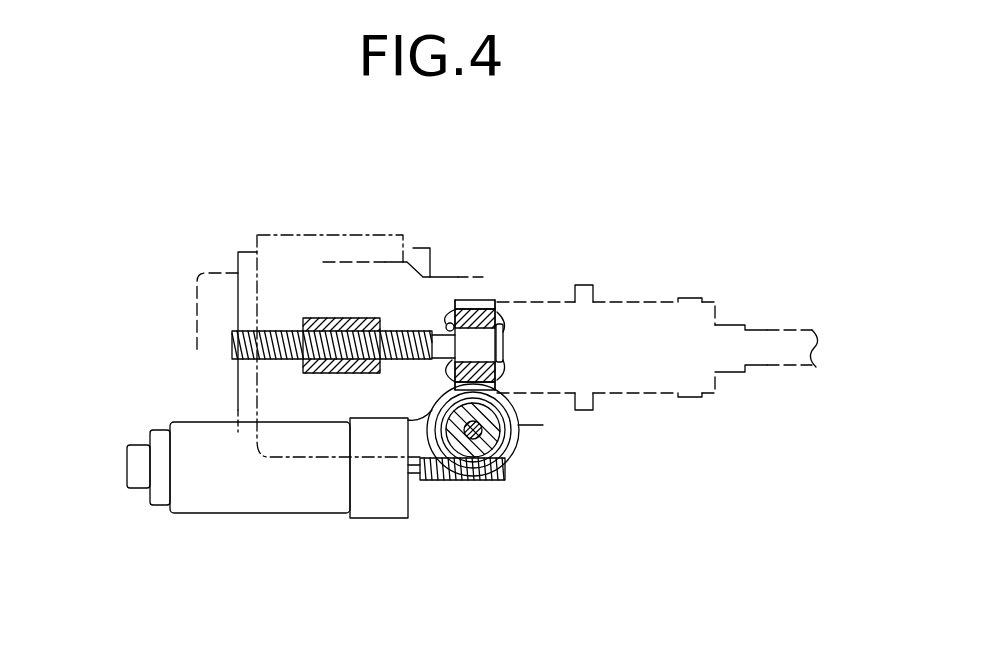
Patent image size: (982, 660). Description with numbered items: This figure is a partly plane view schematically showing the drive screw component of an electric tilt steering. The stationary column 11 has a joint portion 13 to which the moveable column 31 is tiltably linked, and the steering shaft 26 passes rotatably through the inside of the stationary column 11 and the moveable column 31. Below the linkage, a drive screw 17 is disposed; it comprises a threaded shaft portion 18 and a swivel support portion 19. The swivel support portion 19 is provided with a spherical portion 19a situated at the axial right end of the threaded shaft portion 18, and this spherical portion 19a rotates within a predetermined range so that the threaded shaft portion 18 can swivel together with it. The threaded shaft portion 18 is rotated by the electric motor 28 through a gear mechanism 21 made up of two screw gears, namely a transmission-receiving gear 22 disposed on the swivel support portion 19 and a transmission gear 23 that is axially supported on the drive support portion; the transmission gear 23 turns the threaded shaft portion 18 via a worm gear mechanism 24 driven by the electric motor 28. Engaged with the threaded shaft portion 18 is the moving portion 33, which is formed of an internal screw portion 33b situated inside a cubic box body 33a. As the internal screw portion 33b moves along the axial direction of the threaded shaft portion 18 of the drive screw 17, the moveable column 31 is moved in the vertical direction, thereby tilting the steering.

The stationary column 11 is at (404, 231).
The joint portion 13 is at (343, 234).
The drive screw 17 is at (514, 365).
The threaded shaft portion 18 is at (267, 359).
The swivel support portion 19 is at (506, 337).
The spherical portion 19a is at (453, 322).
The gear mechanism 21 is at (478, 298).
The transmission-receiving gear 22 is at (498, 315).
The transmission gear 23 is at (543, 425).
The worm gear mechanism 24 is at (495, 480).
The steering shaft 26 is at (766, 330).
The electric motor 28 is at (380, 518).
The moveable column 31 is at (650, 300).
The moving portion 33 is at (362, 315).
The cubic box body 33a is at (330, 318).
The internal screw portion 33b is at (306, 337).